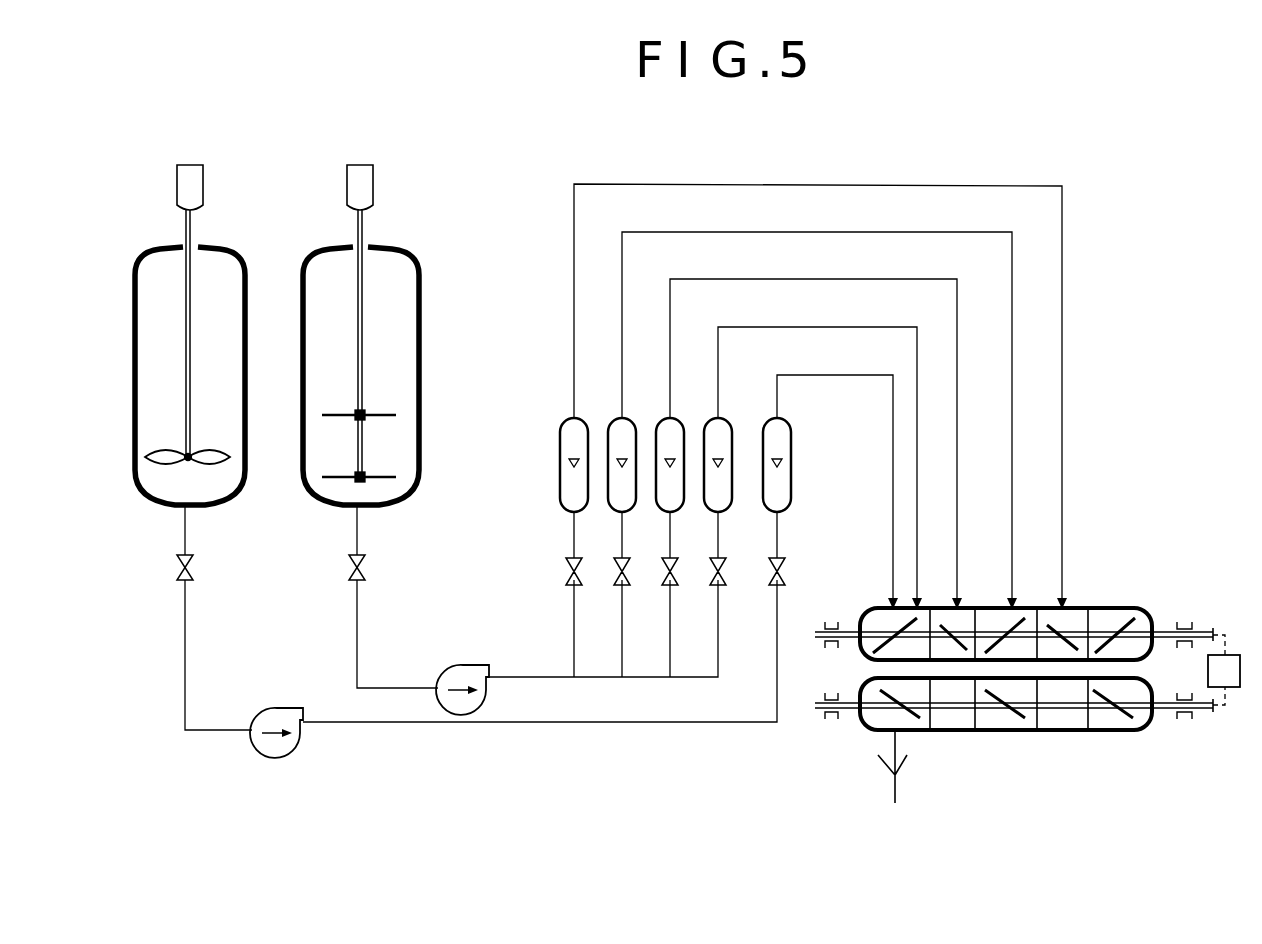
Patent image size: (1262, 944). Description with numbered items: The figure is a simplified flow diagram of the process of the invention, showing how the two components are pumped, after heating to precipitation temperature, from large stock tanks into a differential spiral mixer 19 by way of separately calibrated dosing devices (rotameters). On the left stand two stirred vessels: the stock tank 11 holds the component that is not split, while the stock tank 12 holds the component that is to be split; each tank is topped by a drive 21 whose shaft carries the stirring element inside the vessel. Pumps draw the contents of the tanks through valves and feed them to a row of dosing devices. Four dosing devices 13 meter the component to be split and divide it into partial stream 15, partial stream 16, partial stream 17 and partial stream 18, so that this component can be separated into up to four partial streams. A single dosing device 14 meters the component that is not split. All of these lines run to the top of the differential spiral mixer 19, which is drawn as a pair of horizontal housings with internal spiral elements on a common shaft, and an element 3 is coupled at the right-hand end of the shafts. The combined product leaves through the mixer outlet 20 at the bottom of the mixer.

The drive unit 3 is at (1203, 632).
The stock tank for the component that is not split 11 is at (143, 340).
The stock tank for the component to be split 12 is at (408, 360).
The dosing devices for the component to be split 13 is at (618, 441).
The dosing device for the component that is not split 14 is at (781, 450).
The partial stream 1 15 is at (850, 327).
The partial stream 2 16 is at (826, 281).
The partial stream 3 17 is at (889, 209).
The partial stream 4 18 is at (815, 185).
The differential spiral mixer 19 is at (855, 662).
The mixer outlet 20 is at (898, 777).
The stirrer motor 21 is at (188, 180).